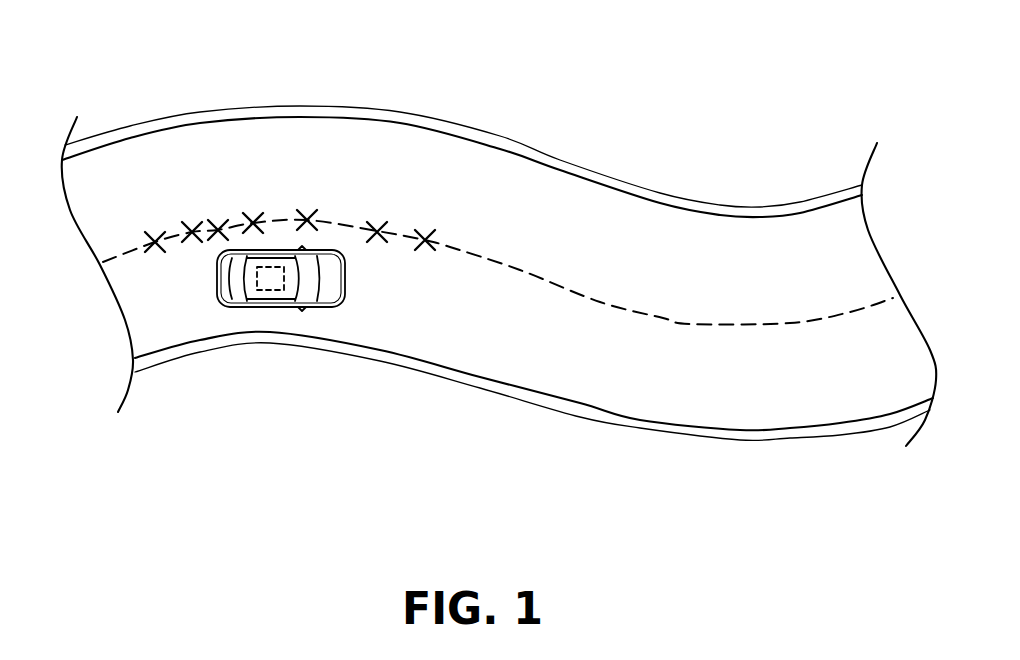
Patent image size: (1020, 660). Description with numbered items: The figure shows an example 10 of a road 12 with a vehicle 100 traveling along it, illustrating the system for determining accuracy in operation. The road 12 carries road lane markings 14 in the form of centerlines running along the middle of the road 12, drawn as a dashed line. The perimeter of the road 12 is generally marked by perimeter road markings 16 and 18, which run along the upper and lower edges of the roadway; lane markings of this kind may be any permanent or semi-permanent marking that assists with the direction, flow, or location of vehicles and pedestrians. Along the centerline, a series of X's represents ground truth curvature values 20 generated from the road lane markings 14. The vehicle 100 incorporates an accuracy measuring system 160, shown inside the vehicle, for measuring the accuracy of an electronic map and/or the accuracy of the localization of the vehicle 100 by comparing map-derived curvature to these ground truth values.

The example 10 is at (737, 144).
The road 12 is at (574, 246).
The road lane markings 14 is at (743, 330).
The perimeter road marking 16 is at (405, 114).
The perimeter road marking 18 is at (477, 383).
The ground truth curvature values 20 is at (450, 230).
The vehicle 100 is at (345, 287).
The accuracy measuring system 160 is at (268, 310).